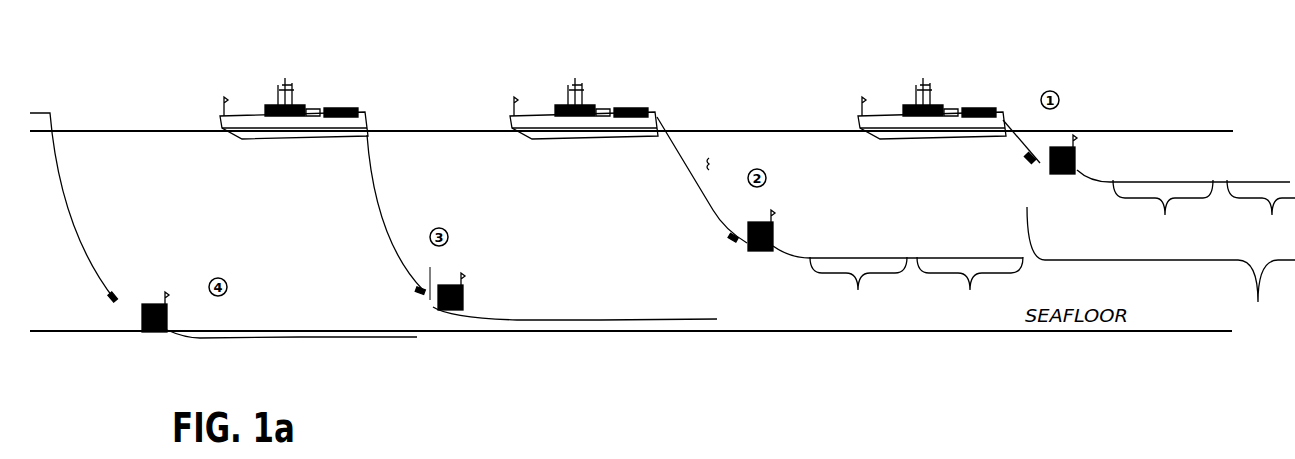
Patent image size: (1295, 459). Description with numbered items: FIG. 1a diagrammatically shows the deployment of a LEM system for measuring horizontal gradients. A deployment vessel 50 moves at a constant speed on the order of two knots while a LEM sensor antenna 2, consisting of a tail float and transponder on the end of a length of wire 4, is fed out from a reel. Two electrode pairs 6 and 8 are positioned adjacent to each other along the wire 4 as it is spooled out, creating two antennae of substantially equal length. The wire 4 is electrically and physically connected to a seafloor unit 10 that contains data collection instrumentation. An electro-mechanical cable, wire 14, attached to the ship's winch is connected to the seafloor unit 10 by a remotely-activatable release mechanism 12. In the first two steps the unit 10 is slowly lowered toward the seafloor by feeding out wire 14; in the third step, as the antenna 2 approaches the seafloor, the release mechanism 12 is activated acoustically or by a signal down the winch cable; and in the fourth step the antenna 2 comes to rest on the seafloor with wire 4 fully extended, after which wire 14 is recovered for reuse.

The LEM sensor antenna 2 is at (1161, 278).
The wire 4 is at (1163, 181).
The electrode pair 6 is at (368, 342).
The electrode pair 8 is at (265, 341).
The seafloor unit 10 is at (143, 328).
The release mechanism 12 is at (1028, 160).
The electro-mechanical cable 14 is at (1003, 142).
The deployment vessel 50 is at (538, 118).